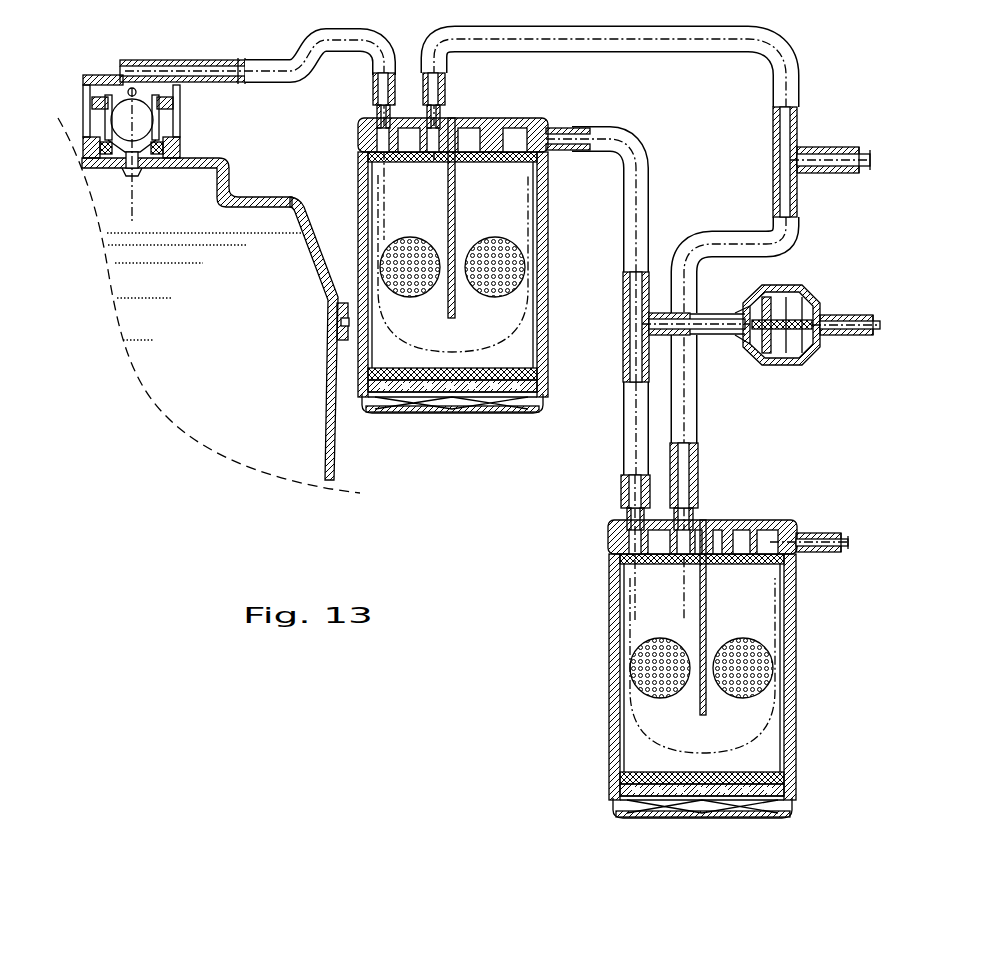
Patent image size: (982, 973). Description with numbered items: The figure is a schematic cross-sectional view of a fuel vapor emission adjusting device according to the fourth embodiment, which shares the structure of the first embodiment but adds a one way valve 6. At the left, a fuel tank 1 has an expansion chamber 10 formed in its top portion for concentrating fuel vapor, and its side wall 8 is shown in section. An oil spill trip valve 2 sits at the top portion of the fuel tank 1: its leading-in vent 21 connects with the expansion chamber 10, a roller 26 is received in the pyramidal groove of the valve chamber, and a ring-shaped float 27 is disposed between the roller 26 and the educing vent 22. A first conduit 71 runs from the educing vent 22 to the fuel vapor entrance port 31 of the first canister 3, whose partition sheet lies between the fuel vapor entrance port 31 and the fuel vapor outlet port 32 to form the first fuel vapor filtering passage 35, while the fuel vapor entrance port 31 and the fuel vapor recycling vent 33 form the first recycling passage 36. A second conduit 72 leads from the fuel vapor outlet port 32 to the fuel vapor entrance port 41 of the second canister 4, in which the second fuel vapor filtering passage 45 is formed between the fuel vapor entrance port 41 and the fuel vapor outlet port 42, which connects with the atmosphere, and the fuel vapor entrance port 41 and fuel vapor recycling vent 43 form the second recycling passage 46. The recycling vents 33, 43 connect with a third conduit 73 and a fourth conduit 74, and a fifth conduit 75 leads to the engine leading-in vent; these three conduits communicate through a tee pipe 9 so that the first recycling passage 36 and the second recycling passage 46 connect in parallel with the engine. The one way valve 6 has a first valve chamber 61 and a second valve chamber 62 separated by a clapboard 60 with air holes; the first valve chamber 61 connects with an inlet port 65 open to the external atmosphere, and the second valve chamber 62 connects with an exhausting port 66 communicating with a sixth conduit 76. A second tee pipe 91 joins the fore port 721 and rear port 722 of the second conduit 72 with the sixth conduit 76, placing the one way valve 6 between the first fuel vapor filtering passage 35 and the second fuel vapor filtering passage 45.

The fuel tank 1 is at (228, 170).
The oil spill trip valve 2 is at (155, 119).
The first canister 3 is at (449, 242).
The second canister 4 is at (700, 630).
The one way valve 6 is at (789, 325).
The tank side wall 8 is at (213, 233).
The tee pipe 9 is at (796, 152).
The expansion chamber 10 is at (113, 207).
The leading-in vent 21 is at (167, 160).
The educing vent 22 is at (128, 73).
The roller 26 is at (143, 118).
The ring-shaped float 27 is at (102, 92).
The fuel vapor entrance port 31 is at (373, 108).
The fuel vapor outlet port 32 is at (583, 142).
The fuel vapor recycling vent 33 is at (435, 110).
The first fuel vapor filtering passage 35 is at (502, 338).
The first recycling passage 36 is at (360, 180).
The fuel vapor entrance port 41 is at (632, 507).
The fuel vapor outlet port 42 is at (816, 548).
The fuel vapor recycling vent 43 is at (686, 512).
The second fuel vapor filtering passage 45 is at (752, 740).
The second recycling passage 46 is at (656, 568).
The clapboard 60 is at (774, 365).
The first valve chamber 61 is at (790, 340).
The second valve chamber 62 is at (757, 340).
The inlet port 65 is at (826, 330).
The exhausting port 66 is at (738, 335).
The first conduit 71 is at (355, 58).
The second conduit 72 is at (621, 286).
The third conduit 73 is at (767, 55).
The fourth conduit 74 is at (698, 397).
The fifth conduit 75 is at (840, 147).
The sixth conduit 76 is at (707, 312).
The second tee pipe 91 is at (622, 325).
The fore port 721 is at (647, 148).
The rear port 722 is at (620, 418).